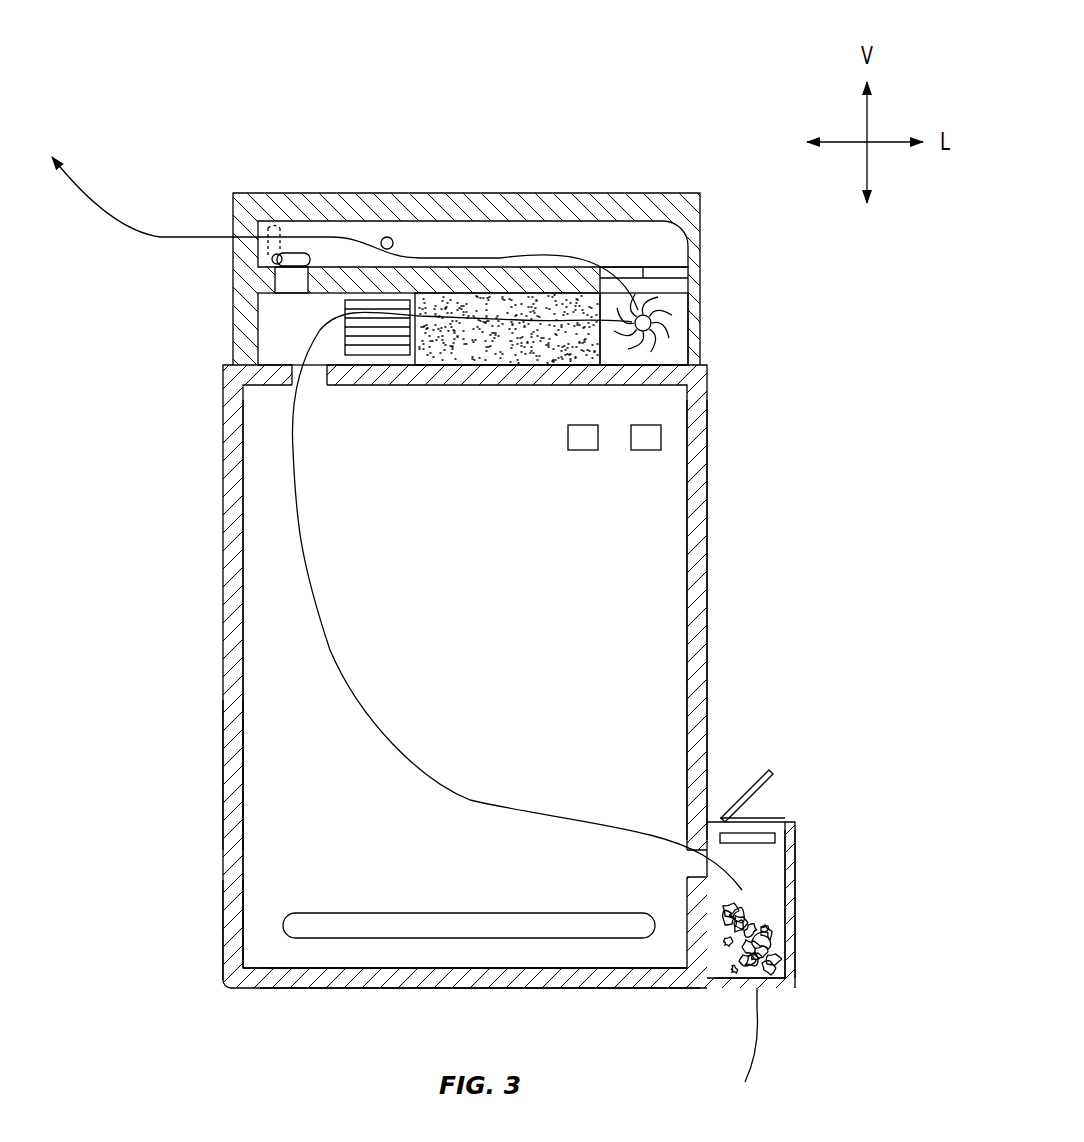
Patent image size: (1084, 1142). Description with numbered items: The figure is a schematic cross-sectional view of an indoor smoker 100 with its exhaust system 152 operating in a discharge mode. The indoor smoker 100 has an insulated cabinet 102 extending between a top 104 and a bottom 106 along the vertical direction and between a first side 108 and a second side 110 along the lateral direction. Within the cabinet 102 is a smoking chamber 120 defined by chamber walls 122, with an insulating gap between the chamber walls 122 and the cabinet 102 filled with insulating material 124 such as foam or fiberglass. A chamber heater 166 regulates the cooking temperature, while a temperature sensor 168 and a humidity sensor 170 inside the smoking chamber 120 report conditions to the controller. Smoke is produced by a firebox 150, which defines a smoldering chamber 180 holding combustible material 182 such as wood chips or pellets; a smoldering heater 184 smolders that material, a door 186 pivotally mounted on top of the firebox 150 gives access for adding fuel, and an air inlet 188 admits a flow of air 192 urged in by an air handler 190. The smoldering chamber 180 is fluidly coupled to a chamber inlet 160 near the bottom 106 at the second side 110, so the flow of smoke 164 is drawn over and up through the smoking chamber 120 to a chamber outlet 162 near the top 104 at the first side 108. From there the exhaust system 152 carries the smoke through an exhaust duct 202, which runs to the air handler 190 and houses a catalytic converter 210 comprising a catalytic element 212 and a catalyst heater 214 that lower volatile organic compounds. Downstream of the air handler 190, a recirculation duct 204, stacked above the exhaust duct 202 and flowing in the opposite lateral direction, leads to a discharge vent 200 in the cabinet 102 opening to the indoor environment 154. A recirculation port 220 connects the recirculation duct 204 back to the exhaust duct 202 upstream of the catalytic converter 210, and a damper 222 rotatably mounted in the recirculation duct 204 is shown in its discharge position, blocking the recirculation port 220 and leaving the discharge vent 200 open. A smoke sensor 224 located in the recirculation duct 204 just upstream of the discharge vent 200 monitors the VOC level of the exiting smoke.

The indoor smoker 100 is at (272, 58).
The insulated cabinet 102 is at (223, 683).
The top 104 is at (626, 188).
The bottom 106 is at (325, 994).
The first side 108 is at (220, 800).
The second side 110 is at (712, 537).
The smoking chamber 120 is at (496, 677).
The chamber walls 122 is at (362, 968).
The insulating material 124 is at (238, 915).
The firebox 150 is at (793, 888).
The exhaust system 152 is at (780, 198).
The indoor environment 154 is at (100, 105).
The chamber inlet 160 is at (702, 864).
The chamber outlet 162 is at (308, 380).
The flow of smoke 164 is at (470, 797).
The chamber heater 166 is at (430, 915).
The temperature sensor 168 is at (585, 450).
The humidity sensor 170 is at (646, 450).
The smoldering chamber 180 is at (766, 860).
The combustible material 182 is at (783, 917).
The smoldering heater 184 is at (777, 810).
The door 186 is at (752, 776).
The air inlet 188 is at (750, 987).
The air handler 190 is at (663, 343).
The flow of air 192 is at (765, 1008).
The discharge vent 200 is at (228, 228).
The exhaust duct 202 is at (282, 320).
The recirculation duct 204 is at (548, 250).
The catalytic converter 210 is at (449, 350).
The catalytic element 212 is at (522, 340).
The catalyst heater 214 is at (385, 345).
The recirculation port 220 is at (284, 284).
The damper 222 is at (297, 253).
The smoke sensor 224 is at (388, 237).